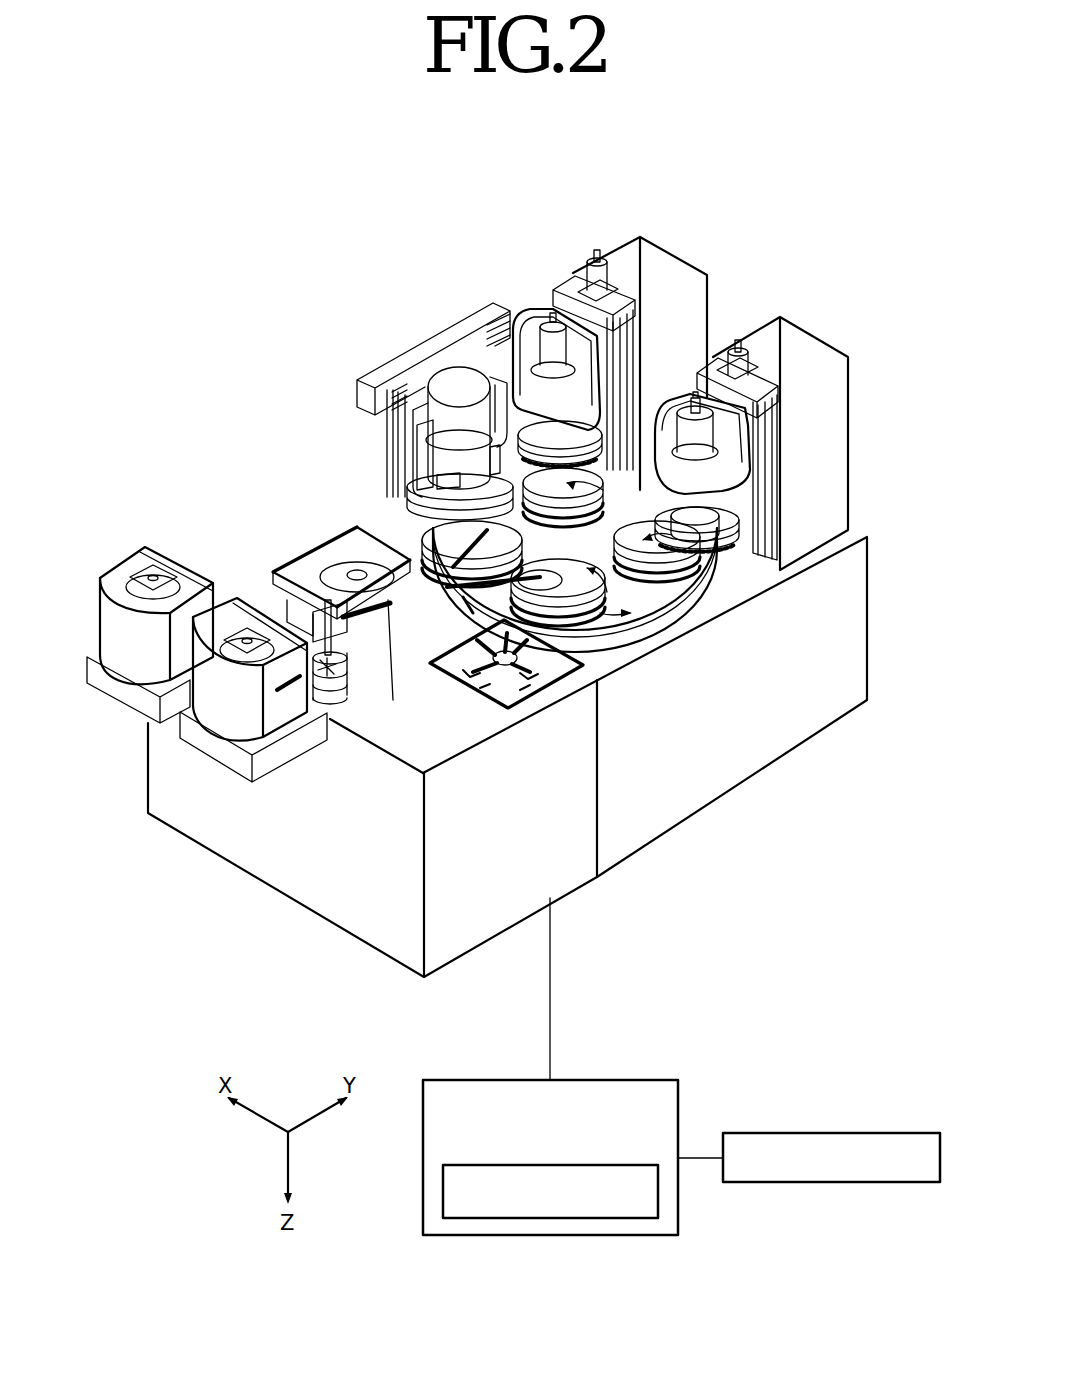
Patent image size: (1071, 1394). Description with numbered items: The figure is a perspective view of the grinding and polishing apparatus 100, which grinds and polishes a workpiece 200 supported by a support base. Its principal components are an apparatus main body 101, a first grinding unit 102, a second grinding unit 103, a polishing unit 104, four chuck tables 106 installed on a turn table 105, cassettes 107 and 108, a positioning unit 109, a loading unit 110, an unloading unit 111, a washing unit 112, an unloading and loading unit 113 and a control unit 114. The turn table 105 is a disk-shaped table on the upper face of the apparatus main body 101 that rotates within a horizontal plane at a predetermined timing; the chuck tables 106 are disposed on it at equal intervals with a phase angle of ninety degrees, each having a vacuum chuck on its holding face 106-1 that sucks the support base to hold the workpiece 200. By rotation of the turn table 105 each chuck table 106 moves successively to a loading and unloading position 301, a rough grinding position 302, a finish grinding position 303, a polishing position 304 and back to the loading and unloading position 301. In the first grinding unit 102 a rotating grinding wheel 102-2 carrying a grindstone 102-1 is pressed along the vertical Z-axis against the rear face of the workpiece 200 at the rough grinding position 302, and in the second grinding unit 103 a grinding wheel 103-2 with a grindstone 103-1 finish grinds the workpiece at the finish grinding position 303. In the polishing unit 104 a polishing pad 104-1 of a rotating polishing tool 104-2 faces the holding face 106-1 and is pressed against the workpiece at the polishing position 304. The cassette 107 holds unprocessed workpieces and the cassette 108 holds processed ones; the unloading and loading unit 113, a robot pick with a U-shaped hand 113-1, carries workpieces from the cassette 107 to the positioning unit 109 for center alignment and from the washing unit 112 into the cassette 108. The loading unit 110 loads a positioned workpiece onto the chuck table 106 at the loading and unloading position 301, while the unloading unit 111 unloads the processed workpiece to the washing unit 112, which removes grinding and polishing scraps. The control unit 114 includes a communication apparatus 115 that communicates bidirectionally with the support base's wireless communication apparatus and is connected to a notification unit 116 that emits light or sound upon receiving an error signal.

The grinding and polishing apparatus 100 is at (445, 240).
The apparatus main body 101 is at (852, 628).
The first grinding unit 102 is at (724, 482).
The grindstone 102-1 is at (706, 520).
The grinding wheel 102-2 is at (742, 548).
The second grinding unit 103 is at (641, 237).
The grindstone 103-1 is at (600, 384).
The grinding wheel 103-2 is at (570, 425).
The polishing unit 104 is at (474, 455).
The polishing pad 104-1 is at (376, 505).
The polishing tool 104-2 is at (409, 495).
The turn table 105 is at (658, 572).
The chuck table 106 is at (538, 512).
The holding face 106-1 is at (541, 450).
The cassette 107 is at (213, 700).
The cassette 108 is at (113, 624).
The positioning unit 109 is at (462, 700).
The loading unit 110 is at (474, 695).
The unloading unit 111 is at (394, 700).
The washing unit 112 is at (352, 582).
The unloading and loading unit 113 is at (330, 700).
The U-shaped hand 113-1 is at (368, 712).
The control unit 114 is at (590, 1081).
The communication apparatus 115 is at (590, 1166).
The notification unit 116 is at (853, 1133).
The workpiece 200 is at (441, 525).
The loading and unloading position 301 is at (571, 596).
The rough grinding position 302 is at (646, 556).
The finish grinding position 303 is at (563, 504).
The polishing position 304 is at (491, 559).